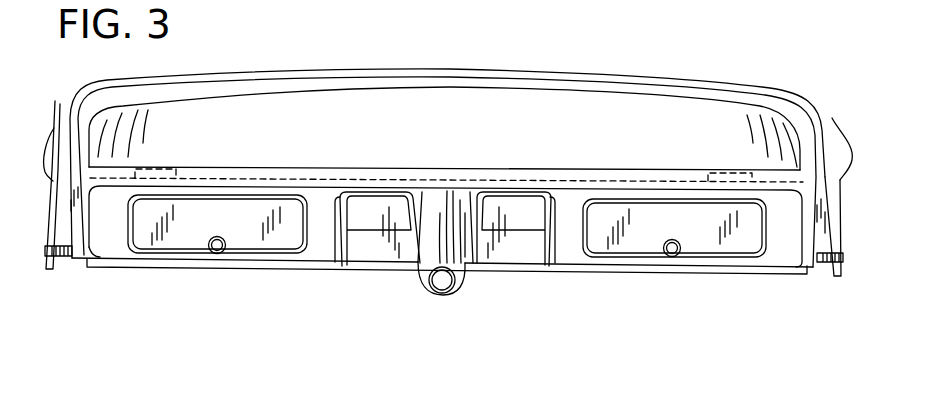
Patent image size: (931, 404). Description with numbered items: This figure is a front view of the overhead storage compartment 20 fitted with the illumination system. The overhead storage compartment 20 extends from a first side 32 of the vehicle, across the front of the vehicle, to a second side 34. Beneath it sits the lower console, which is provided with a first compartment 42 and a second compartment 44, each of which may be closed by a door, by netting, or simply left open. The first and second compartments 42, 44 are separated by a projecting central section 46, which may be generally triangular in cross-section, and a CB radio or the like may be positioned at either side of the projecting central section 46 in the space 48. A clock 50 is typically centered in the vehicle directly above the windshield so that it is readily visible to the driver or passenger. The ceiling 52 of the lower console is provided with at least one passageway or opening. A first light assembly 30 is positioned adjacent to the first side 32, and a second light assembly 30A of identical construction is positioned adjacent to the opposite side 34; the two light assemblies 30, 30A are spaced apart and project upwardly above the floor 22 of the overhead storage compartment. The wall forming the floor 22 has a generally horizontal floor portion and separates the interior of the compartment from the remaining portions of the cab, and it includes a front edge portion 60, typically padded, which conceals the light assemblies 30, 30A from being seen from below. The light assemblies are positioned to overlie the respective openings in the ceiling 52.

The overhead storage compartment 20 is at (665, 110).
The floor 22 is at (296, 180).
The first light assembly 30 is at (173, 165).
The second light assembly 30A is at (725, 176).
The first side 32 is at (55, 108).
The second side 34 is at (832, 118).
The first compartment 42 is at (249, 228).
The second compartment 44 is at (717, 235).
The projecting central section 46 is at (449, 236).
The space 48 is at (366, 208).
The clock 50 is at (432, 295).
The ceiling 52 is at (118, 187).
The front edge portion 60 is at (462, 177).